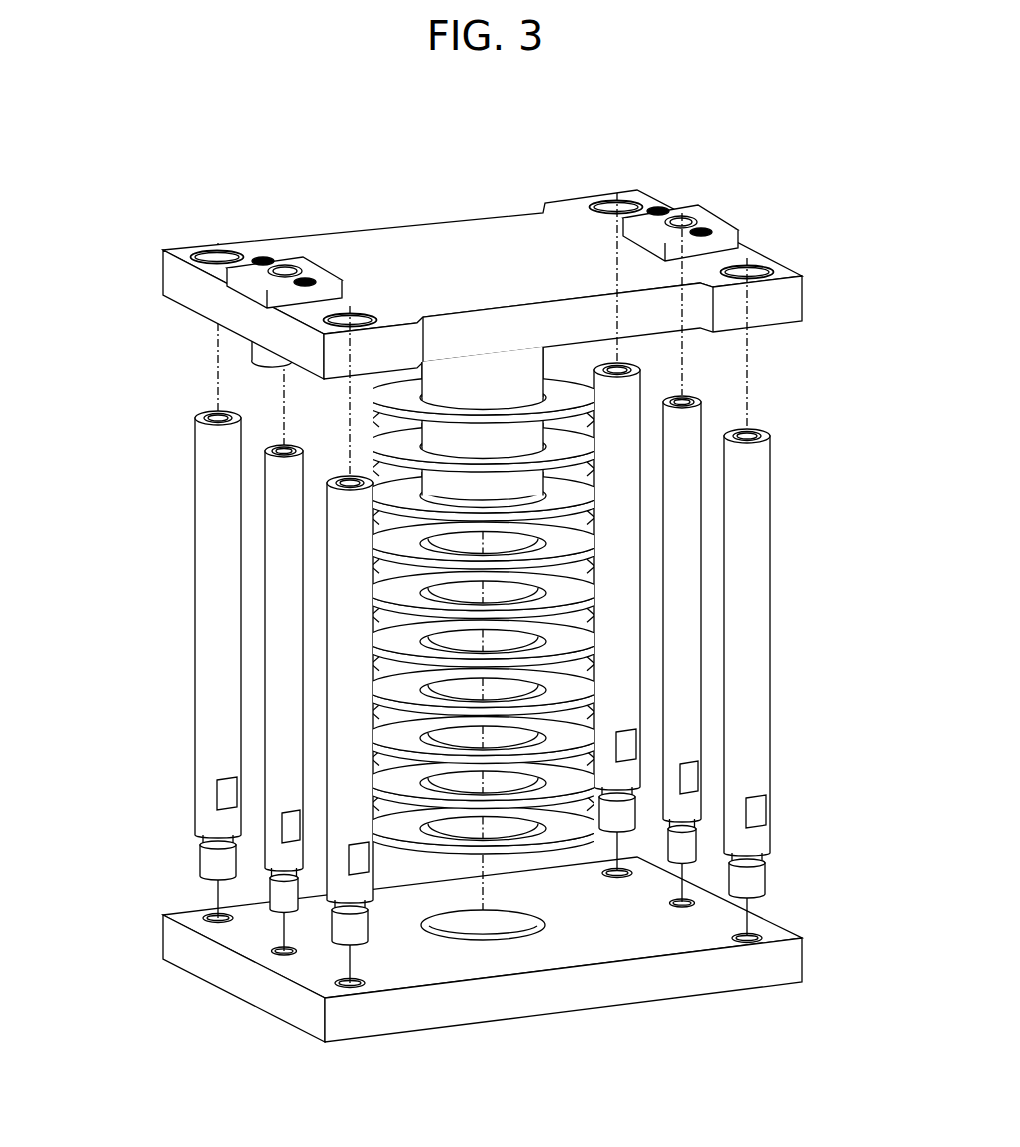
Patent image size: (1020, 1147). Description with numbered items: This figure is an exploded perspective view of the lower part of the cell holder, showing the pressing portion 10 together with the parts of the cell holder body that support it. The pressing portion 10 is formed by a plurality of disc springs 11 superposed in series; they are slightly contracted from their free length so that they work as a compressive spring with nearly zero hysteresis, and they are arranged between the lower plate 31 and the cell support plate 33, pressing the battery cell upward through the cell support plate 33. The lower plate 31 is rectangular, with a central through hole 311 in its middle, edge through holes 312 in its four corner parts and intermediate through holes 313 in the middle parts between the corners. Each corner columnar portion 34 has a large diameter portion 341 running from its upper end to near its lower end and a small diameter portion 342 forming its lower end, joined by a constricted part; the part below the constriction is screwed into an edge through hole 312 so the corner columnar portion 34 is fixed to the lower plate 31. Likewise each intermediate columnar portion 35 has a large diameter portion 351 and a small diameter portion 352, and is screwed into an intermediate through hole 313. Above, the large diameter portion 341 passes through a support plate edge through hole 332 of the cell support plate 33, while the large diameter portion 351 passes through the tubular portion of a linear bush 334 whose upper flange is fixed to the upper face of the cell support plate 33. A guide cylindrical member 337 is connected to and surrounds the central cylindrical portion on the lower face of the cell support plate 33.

The pressing portion 10 is at (612, 600).
The disc springs 11 is at (483, 661).
The lower plate 31 is at (470, 983).
The central through hole 311 is at (513, 932).
The edge through holes 312 is at (207, 918).
The intermediate through holes 313 is at (255, 947).
The cell support plate 33 is at (531, 298).
The support plate edge through holes 332 is at (216, 258).
The linear bush 334 is at (295, 250).
The guide cylindrical member 337 is at (505, 372).
The corner columnar portions 34 is at (140, 580).
The large diameter portion 341 is at (196, 561).
The small diameter portion 342 is at (203, 857).
The intermediate columnar portions 35 is at (171, 638).
The large diameter portion 351 is at (197, 520).
The small diameter portion 352 is at (283, 900).